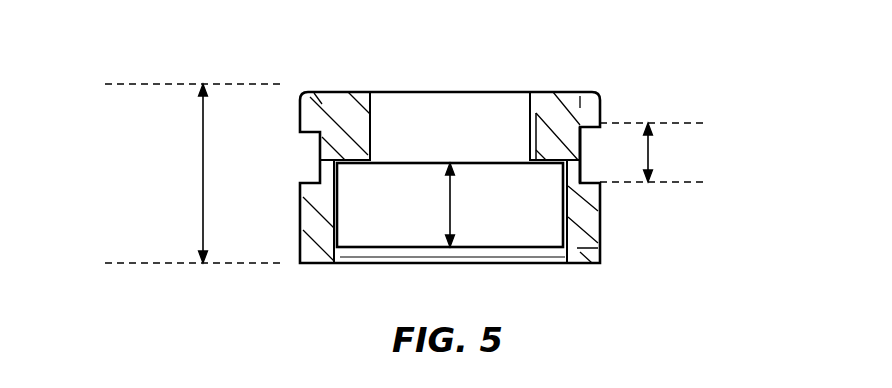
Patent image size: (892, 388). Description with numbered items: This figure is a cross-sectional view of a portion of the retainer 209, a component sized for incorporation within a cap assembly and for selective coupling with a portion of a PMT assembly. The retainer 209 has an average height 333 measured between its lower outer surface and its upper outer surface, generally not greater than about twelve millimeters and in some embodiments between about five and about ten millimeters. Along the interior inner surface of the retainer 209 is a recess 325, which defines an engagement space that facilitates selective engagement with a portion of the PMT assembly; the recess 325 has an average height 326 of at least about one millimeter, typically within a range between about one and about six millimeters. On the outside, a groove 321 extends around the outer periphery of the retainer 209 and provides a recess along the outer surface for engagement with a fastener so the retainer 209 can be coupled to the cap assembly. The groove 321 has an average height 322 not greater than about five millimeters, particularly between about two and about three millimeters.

The retainer 209 is at (612, 72).
The recess 325 is at (386, 226).
The height of the recess 326 is at (453, 203).
The average height of the retainer 333 is at (203, 167).
The average height of the groove 322 is at (650, 152).
The groove 321 is at (600, 162).